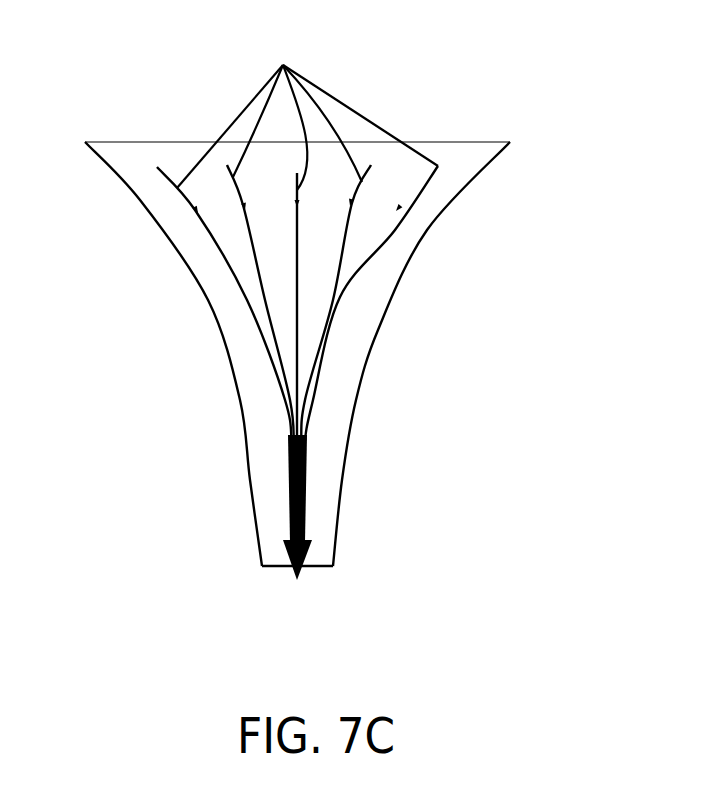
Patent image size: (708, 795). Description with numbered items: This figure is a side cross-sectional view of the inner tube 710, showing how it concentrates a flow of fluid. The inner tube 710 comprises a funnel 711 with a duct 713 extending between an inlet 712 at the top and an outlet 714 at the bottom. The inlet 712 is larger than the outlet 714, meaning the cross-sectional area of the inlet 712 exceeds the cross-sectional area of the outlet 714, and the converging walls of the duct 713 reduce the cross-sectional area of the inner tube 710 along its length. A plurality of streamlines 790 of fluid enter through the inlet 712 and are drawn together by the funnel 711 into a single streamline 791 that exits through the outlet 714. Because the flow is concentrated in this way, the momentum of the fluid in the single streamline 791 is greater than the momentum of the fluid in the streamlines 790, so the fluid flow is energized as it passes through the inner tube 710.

The inner tube 710 is at (145, 183).
The funnel 711 is at (566, 99).
The inlet 712 is at (145, 142).
The duct 713 is at (378, 325).
The outlet 714 is at (325, 567).
The streamlines 790 is at (307, 114).
The single streamline 791 is at (303, 515).